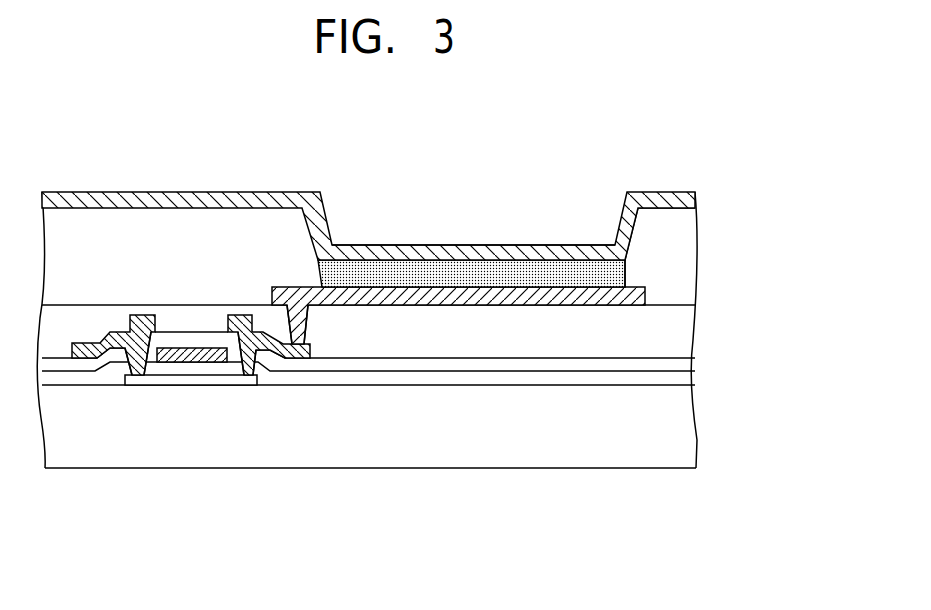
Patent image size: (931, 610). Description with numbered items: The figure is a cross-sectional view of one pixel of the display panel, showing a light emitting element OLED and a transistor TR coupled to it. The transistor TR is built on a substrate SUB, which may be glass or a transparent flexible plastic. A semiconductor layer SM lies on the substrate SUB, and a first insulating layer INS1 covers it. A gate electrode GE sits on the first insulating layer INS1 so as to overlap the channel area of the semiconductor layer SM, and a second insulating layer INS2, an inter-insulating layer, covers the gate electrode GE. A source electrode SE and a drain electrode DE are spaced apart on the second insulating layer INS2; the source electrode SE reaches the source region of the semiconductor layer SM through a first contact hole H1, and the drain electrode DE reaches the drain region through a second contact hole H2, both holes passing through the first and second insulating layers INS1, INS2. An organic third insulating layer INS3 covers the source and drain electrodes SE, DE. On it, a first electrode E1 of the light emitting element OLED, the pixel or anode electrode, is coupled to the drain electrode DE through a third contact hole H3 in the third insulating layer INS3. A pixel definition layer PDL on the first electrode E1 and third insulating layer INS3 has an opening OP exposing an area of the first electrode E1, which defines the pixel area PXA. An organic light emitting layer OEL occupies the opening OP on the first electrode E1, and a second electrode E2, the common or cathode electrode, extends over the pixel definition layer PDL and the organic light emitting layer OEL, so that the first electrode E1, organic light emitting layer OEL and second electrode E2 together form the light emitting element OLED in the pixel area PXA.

The substrate SUB is at (682, 430).
The first insulating layer INS1 is at (683, 383).
The second insulating layer INS2 is at (682, 367).
The third insulating layer INS3 is at (682, 335).
The semiconductor layer SM is at (223, 378).
The gate electrode GE is at (183, 357).
The source electrode SE is at (88, 353).
The drain electrode DE is at (287, 353).
The first contact hole H1 is at (139, 373).
The second contact hole H2 is at (247, 373).
The third contact hole H3 is at (297, 333).
The transistor TR is at (308, 535).
The first electrode E1 is at (412, 294).
The organic light emitting layer OEL is at (452, 274).
The second electrode E2 is at (495, 253).
The opening OP is at (599, 244).
The pixel definition layer PDL is at (682, 257).
The light emitting element OLED is at (517, 178).
The pixel area PXA is at (547, 218).